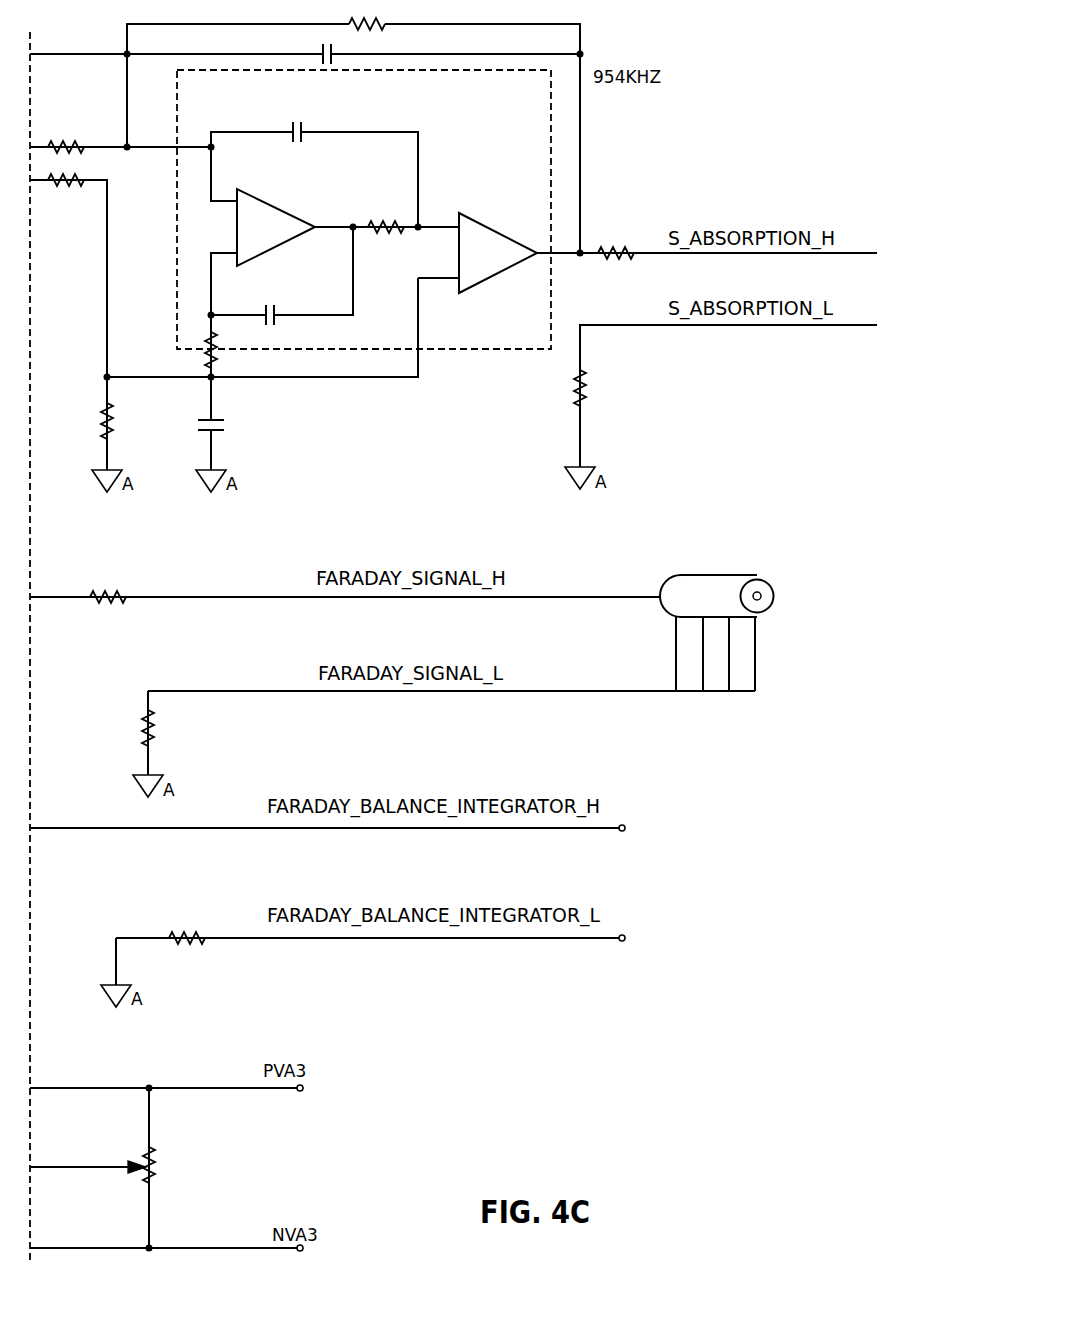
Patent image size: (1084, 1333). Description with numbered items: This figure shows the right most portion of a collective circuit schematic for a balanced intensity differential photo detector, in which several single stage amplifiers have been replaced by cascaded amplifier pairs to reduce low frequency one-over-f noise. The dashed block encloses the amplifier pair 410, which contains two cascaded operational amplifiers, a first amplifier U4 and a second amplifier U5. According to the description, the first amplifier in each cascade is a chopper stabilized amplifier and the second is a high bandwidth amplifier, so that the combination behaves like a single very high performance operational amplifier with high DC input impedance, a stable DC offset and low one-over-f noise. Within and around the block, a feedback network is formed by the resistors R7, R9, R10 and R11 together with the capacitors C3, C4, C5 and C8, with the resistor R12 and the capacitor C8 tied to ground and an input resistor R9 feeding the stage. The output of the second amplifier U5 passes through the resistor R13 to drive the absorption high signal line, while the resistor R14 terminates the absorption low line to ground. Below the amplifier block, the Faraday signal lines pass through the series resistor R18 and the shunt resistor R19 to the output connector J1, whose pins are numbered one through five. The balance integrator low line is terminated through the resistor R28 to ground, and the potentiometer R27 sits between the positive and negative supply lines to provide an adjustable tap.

The amplifier pair 410 is at (493, 357).
The operational amplifier U4 is at (281, 221).
The operational amplifier U5 is at (497, 241).
The output connector J1 is at (711, 605).
The resistor 500 ohm R7 is at (68, 118).
The resistor 500 ohm R9 is at (230, 125).
The resistor 10.0K R10 is at (388, 207).
The resistor 10.0K R11 is at (241, 348).
The resistor 500 ohm R12 is at (128, 421).
The resistor 49.9 ohm R13 is at (616, 233).
The resistor 49.9 ohm R14 is at (604, 389).
The resistor 49.9 ohm R18 is at (110, 571).
The resistor 49.9 ohm R19 is at (171, 726).
The potentiometer 100 ohm R27 is at (152, 1156).
The resistor 100 ohm R28 is at (187, 920).
The capacitor 330p NPO C3 is at (261, 47).
The capacitor 0.01 C4 is at (297, 109).
The capacitor 0.01 C5 is at (292, 296).
The capacitor 330p NPO C8 is at (260, 421).